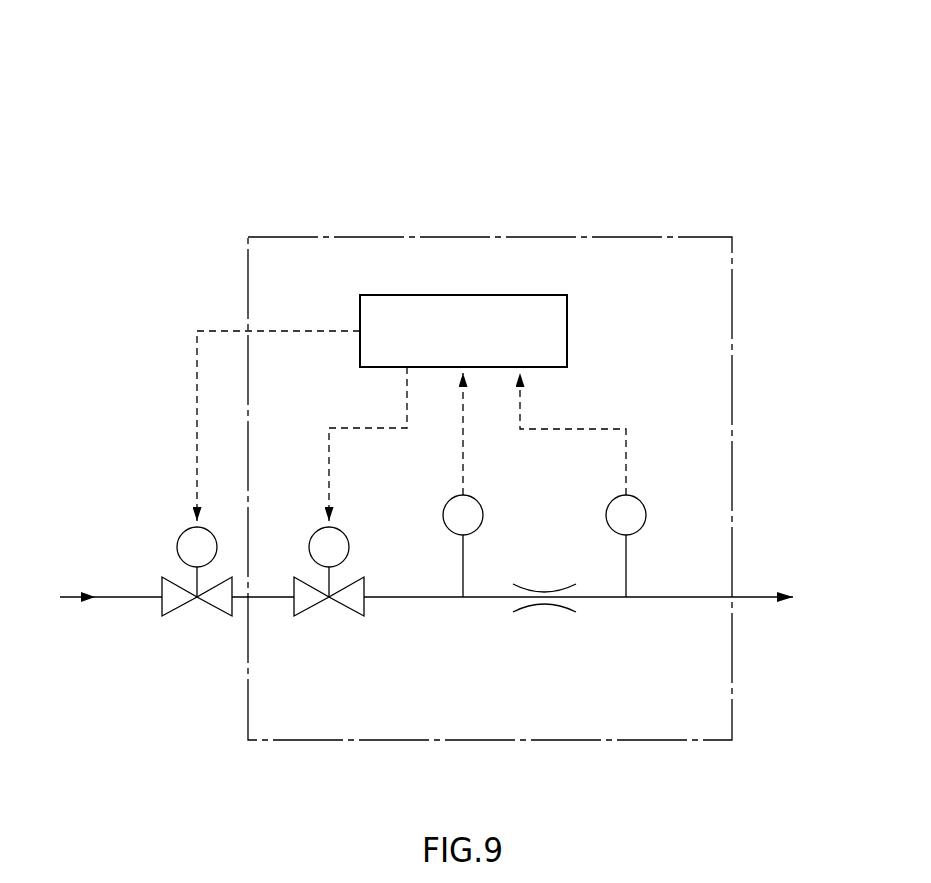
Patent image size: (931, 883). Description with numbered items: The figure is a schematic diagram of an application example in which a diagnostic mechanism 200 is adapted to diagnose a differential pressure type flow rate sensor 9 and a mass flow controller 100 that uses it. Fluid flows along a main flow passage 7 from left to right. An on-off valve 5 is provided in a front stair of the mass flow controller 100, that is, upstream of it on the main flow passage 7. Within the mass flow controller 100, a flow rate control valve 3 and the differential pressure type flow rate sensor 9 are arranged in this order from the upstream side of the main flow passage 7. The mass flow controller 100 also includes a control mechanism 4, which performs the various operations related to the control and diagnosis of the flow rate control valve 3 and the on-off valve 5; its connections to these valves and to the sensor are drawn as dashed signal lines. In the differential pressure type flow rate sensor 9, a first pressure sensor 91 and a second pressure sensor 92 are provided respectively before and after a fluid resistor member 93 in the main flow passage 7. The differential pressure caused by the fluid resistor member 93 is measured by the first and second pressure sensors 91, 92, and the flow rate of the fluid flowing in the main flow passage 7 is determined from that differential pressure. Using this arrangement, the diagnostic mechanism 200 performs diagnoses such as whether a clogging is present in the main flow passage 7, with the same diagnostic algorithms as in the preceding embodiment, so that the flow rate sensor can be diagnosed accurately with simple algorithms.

The diagnostic mechanism 200 is at (231, 169).
The mass flow controller 100 is at (575, 238).
The control mechanism 4 is at (567, 325).
The main flow passage 7 is at (412, 619).
The on-off valve 5 is at (182, 530).
The flow rate control valve 3 is at (312, 530).
The differential pressure type flow rate sensor 9 is at (646, 477).
The first pressure sensor 91 is at (444, 501).
The second pressure sensor 92 is at (611, 500).
The fluid resistor member 93 is at (547, 623).